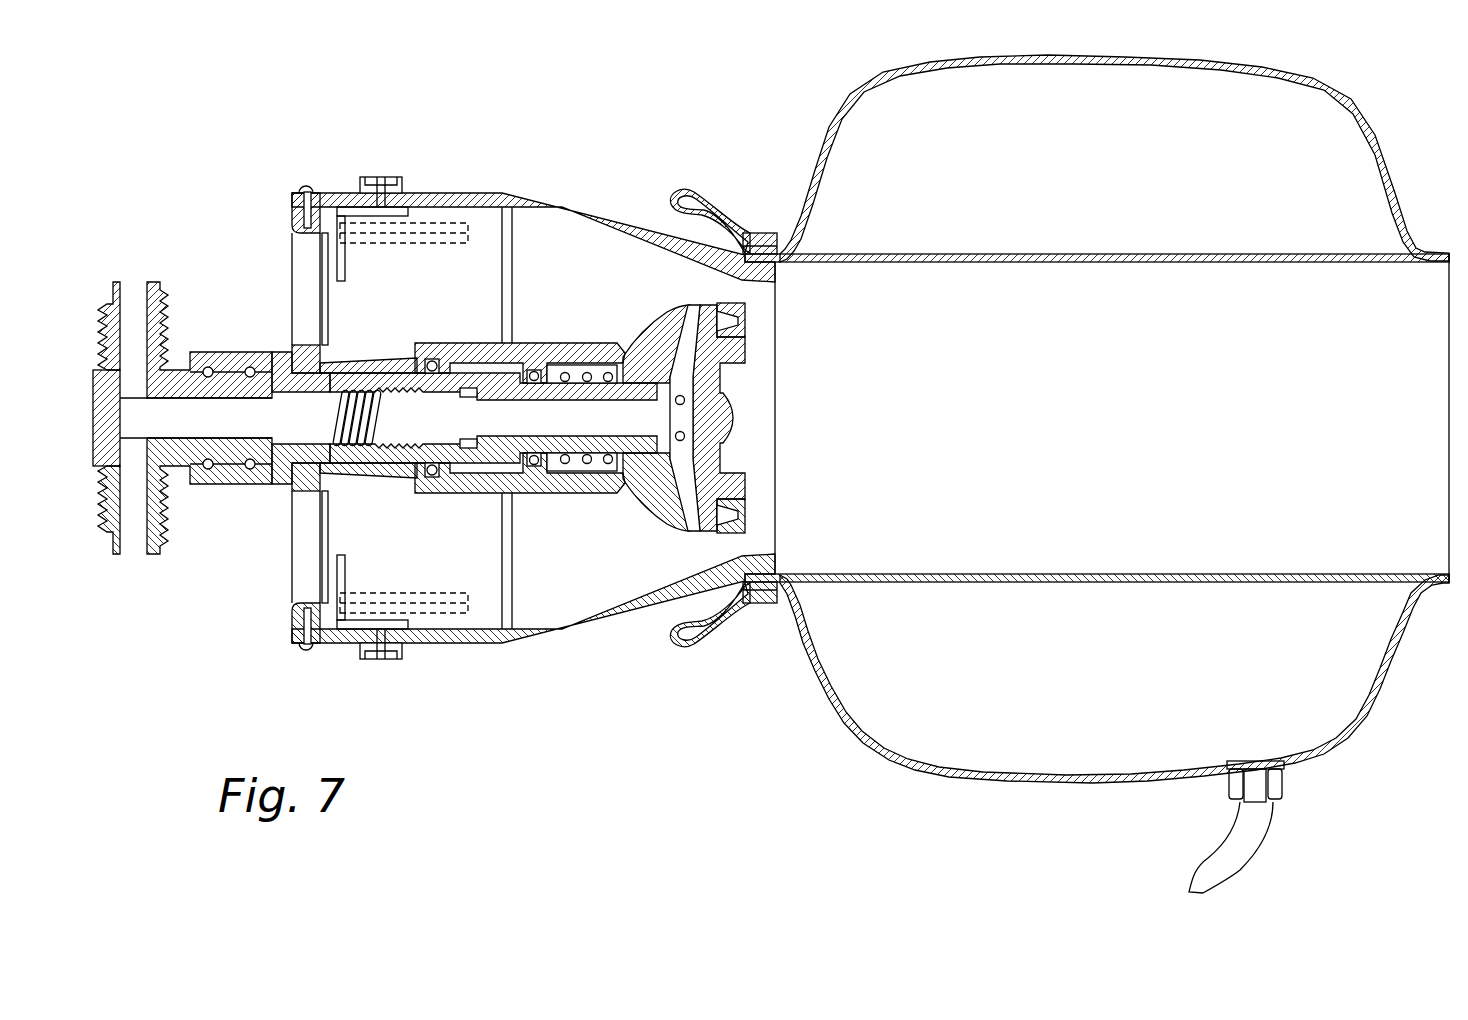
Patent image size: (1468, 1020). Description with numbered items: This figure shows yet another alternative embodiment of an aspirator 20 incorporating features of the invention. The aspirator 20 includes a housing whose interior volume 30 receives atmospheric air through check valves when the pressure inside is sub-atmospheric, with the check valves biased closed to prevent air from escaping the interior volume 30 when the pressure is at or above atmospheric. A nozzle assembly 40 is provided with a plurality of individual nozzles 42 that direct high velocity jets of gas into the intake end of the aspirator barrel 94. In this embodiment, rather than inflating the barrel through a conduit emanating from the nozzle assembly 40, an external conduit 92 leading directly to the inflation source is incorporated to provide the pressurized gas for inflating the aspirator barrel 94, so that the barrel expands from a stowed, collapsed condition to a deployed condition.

The aspirator 20 is at (285, 692).
The interior volume 30 is at (572, 282).
The nozzle assembly 40 is at (667, 328).
The nozzle 42 is at (730, 317).
The external conduit 92 is at (1258, 841).
The aspirator barrel 94 is at (1345, 123).